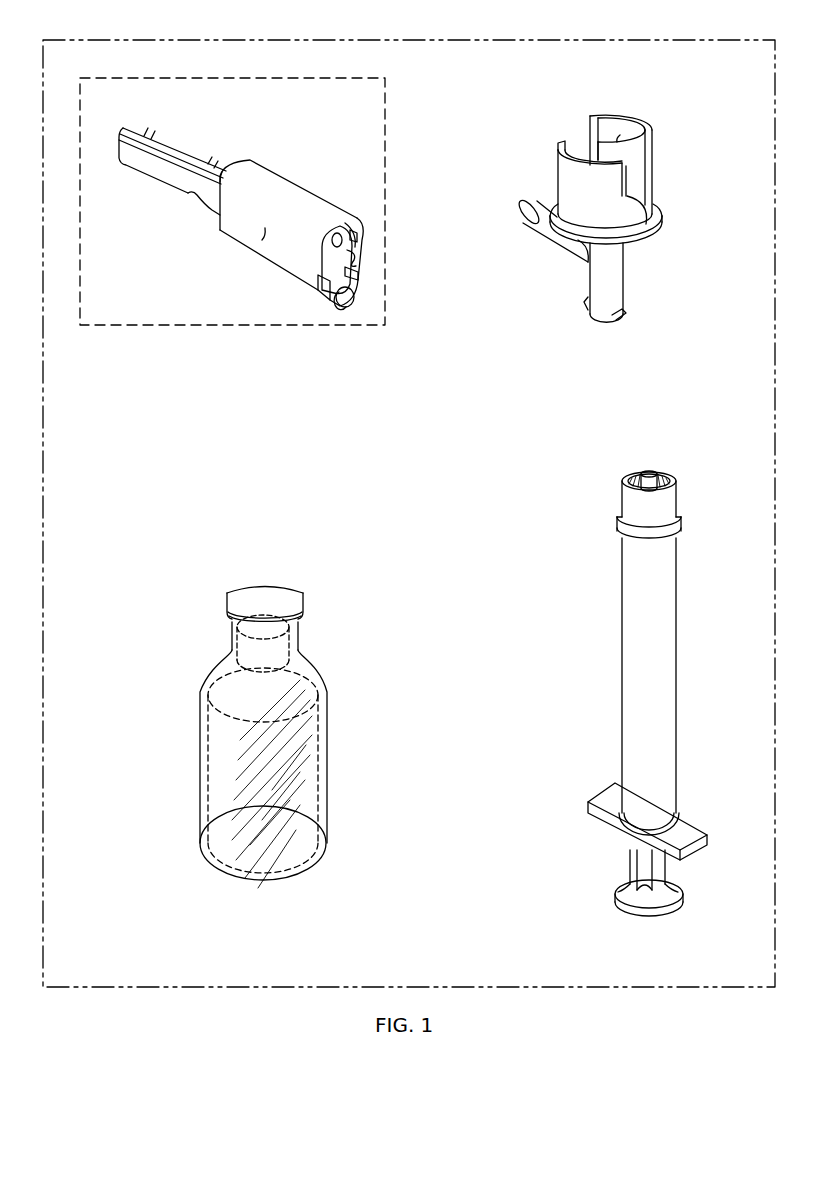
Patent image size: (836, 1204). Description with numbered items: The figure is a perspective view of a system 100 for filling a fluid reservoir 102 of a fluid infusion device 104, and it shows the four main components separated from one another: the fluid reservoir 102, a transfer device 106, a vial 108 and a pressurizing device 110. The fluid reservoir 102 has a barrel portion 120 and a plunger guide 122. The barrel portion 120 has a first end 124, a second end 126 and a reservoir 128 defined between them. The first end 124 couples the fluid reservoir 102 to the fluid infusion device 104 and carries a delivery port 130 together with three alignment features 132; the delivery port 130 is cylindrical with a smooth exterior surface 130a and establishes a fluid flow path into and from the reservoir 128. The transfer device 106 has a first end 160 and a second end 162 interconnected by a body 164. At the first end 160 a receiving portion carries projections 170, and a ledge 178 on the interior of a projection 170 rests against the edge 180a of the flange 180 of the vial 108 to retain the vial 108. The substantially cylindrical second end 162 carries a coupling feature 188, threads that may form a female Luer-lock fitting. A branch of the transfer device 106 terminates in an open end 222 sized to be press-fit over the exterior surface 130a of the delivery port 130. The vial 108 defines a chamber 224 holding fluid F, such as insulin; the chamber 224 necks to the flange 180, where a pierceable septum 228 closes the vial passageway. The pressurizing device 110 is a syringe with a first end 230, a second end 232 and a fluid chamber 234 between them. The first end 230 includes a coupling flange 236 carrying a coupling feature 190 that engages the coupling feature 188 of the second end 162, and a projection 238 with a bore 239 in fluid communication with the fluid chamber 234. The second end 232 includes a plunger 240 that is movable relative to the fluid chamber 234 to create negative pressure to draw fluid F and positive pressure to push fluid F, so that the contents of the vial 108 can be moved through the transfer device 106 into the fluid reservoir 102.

The system 100 is at (527, 40).
The fluid reservoir 102 is at (291, 211).
The fluid infusion device 104 is at (385, 96).
The transfer device 106 is at (607, 211).
The vial 108 is at (283, 759).
The pressurizing device 110 is at (648, 678).
The barrel portion 120 is at (291, 196).
The plunger guide 122 is at (172, 129).
The first end 124 is at (401, 213).
The second end 126 is at (220, 230).
The reservoir 128 is at (262, 242).
The delivery port 130 is at (364, 333).
The exterior surface 130a is at (326, 294).
The alignment features 132 is at (356, 237).
The first end 160 is at (609, 152).
The second end 162 is at (653, 291).
The body 164 is at (655, 275).
The projections 170 is at (560, 167).
The ledge 178 is at (615, 134).
The coupling feature 188 is at (634, 318).
The coupling feature 190 is at (664, 482).
The end 222 is at (520, 216).
The chamber 224 is at (277, 769).
The septum 228 is at (250, 630).
The first end 230 is at (637, 460).
The second end 232 is at (671, 878).
The fluid chamber 234 is at (680, 678).
The coupling flange 236 is at (615, 471).
The projection 238 is at (631, 460).
The bore 239 is at (648, 473).
The plunger 240 is at (652, 918).
The flange 180 is at (312, 616).
The edge 180a is at (302, 624).
The fluid F is at (220, 755).